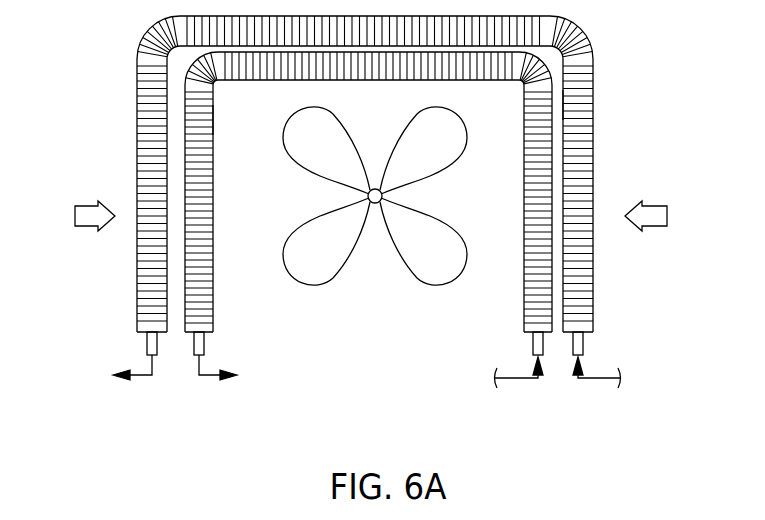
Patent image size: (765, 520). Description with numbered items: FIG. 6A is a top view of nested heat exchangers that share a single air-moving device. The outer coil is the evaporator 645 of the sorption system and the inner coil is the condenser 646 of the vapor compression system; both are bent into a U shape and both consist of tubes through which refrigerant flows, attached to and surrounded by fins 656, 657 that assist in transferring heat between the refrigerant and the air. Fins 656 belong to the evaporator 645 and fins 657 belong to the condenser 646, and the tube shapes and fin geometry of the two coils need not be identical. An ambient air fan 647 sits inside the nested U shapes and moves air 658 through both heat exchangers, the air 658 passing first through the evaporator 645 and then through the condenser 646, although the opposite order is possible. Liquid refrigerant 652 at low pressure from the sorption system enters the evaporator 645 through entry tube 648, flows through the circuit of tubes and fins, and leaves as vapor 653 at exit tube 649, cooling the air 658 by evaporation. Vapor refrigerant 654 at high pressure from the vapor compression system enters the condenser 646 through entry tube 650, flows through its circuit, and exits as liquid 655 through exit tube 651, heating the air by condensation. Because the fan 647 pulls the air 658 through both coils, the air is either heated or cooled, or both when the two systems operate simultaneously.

The evaporator 645 is at (593, 140).
The condenser 646 is at (213, 207).
The ambient air fan 647 is at (457, 135).
The entry tube 648 is at (583, 345).
The exit tube 649 is at (147, 345).
The entry tube 650 is at (533, 345).
The exit tube 651 is at (204, 345).
The liquid refrigerant 652 is at (578, 380).
The vapor 653 is at (141, 377).
The vapor refrigerant 654 is at (510, 380).
The liquid 655 is at (218, 377).
The fins 656 is at (583, 107).
The fins 657 is at (205, 125).
The air 658 is at (82, 206).